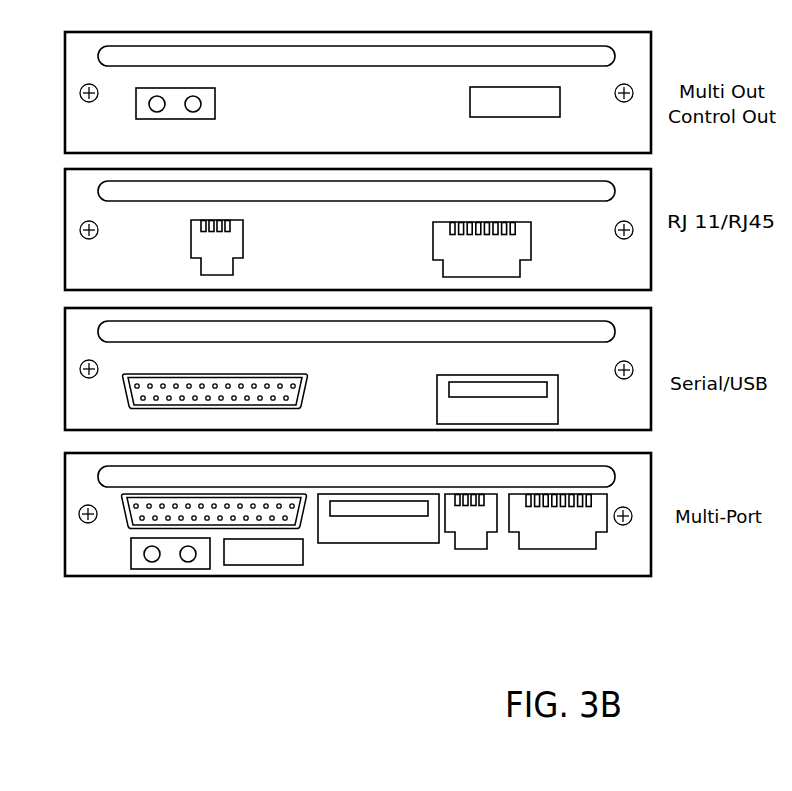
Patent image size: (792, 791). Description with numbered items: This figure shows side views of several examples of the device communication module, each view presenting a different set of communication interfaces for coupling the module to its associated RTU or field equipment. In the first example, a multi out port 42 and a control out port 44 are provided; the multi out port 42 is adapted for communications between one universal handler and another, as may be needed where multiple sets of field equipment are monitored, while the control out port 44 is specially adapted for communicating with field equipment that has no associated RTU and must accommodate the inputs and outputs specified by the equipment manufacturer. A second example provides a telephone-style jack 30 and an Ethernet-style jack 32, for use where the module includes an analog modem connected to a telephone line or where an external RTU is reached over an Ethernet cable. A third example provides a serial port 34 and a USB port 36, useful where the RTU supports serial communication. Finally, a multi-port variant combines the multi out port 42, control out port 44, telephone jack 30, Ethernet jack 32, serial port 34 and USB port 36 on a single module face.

The multi out port 42 is at (175, 116).
The control out port 44 is at (513, 117).
The RJ 11 jack 30 is at (180, 245).
The RJ 45 jack 32 is at (448, 247).
The serial port 34 is at (215, 378).
The USB port 36 is at (497, 387).